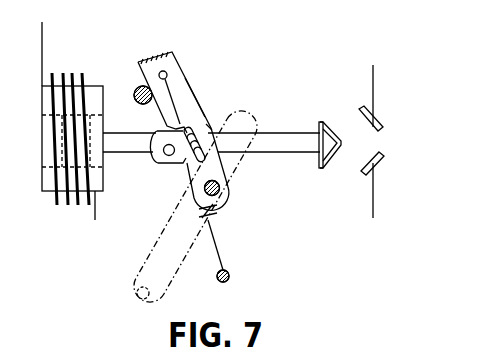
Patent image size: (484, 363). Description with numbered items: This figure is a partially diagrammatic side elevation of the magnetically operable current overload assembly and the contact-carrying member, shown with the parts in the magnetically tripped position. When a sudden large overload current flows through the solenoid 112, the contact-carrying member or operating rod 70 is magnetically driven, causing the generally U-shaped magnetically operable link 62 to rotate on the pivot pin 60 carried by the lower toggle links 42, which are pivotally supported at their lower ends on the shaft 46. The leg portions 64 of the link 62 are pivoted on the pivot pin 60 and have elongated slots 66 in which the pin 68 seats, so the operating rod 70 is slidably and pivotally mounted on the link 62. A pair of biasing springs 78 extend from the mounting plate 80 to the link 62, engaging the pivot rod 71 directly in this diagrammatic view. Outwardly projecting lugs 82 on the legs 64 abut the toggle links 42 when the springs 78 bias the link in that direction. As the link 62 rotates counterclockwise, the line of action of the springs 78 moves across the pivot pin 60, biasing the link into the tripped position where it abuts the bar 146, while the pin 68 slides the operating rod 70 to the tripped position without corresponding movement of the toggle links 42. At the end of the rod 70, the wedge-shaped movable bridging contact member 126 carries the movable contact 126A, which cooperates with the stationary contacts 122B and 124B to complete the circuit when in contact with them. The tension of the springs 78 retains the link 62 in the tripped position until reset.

The solenoid 112 is at (54, 74).
The bar 146 is at (136, 88).
The magnetically operable link 62 is at (180, 56).
The pivot rod 71 is at (167, 75).
The leg portions 64 is at (197, 99).
The pin 68 is at (209, 127).
The lugs 82 is at (177, 164).
The elongated slots 66 is at (189, 166).
The pivot pin 60 is at (220, 188).
The operating rod 70 is at (287, 153).
The movable bridging contact member 126 is at (320, 124).
The movable contact 126A is at (329, 121).
The stationary contact 124B is at (381, 128).
The stationary contact 122B is at (379, 164).
The lower toggle links 42 is at (140, 268).
The shaft 46 is at (150, 295).
The biasing springs 78 is at (215, 240).
The mounting plate 80 is at (229, 273).